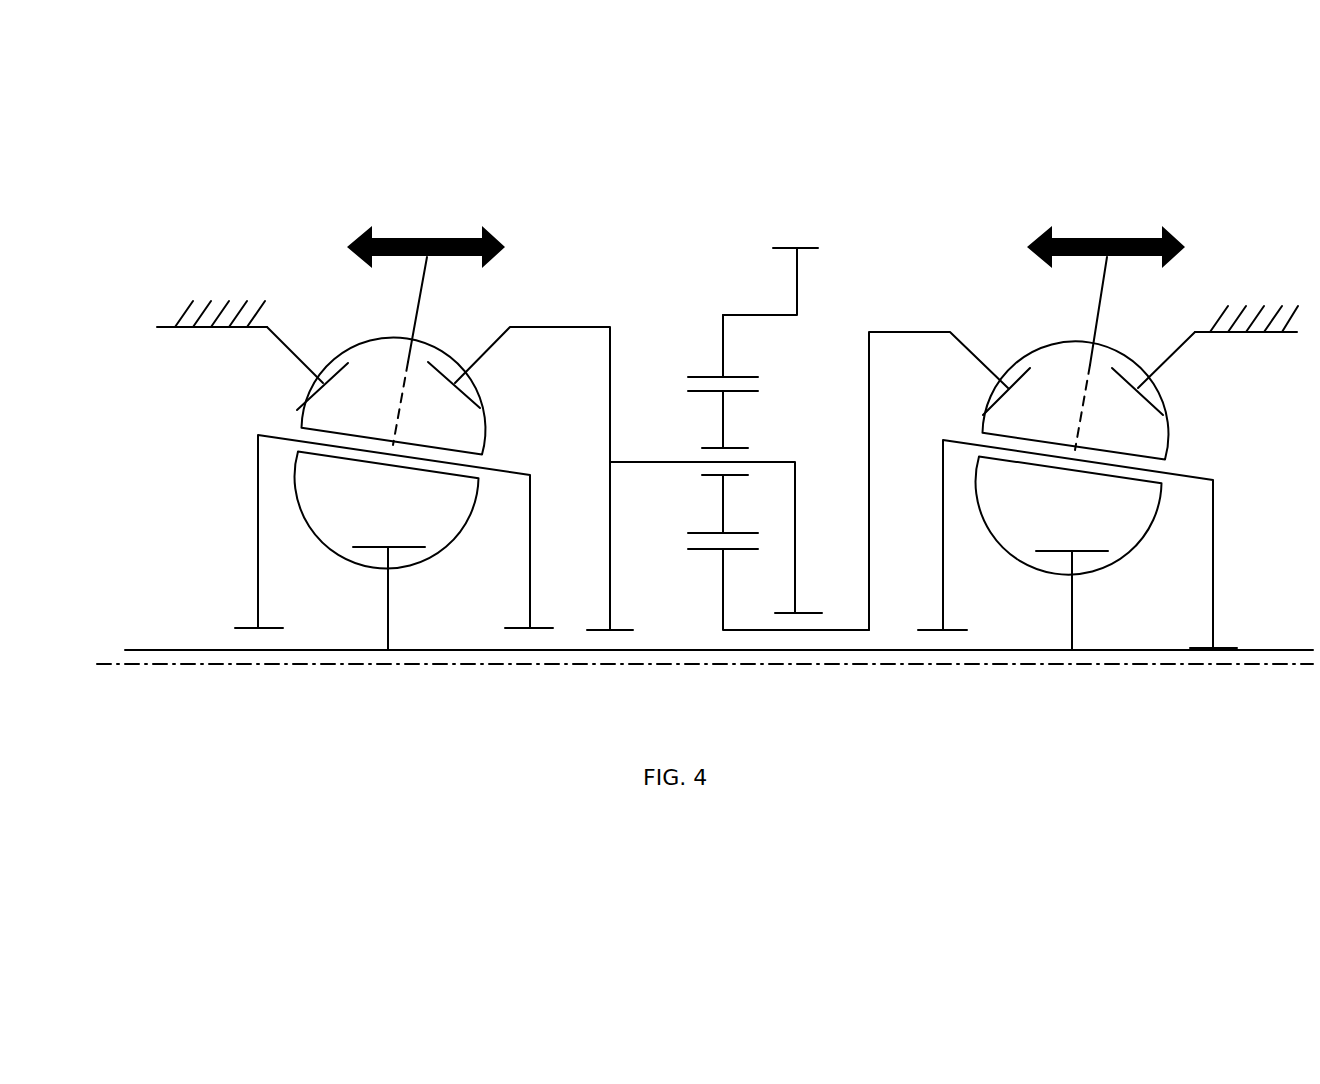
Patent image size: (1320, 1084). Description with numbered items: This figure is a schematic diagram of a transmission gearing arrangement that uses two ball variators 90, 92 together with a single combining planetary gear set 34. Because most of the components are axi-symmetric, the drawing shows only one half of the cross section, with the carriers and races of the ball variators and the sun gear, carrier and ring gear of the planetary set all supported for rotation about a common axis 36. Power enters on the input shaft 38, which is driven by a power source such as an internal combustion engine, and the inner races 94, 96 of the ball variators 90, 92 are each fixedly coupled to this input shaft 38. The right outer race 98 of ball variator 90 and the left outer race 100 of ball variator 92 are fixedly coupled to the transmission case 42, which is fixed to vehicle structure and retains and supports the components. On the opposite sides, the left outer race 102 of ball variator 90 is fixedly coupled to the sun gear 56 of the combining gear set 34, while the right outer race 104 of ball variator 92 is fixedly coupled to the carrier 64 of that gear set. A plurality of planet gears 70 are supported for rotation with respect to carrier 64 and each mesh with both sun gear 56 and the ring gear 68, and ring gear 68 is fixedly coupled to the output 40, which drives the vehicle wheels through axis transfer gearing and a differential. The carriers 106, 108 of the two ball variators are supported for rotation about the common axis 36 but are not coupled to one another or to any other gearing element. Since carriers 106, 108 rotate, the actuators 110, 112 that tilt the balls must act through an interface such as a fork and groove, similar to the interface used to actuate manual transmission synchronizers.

The combining gear set 34 is at (725, 260).
The common axis 36 is at (478, 664).
The input shaft 38 is at (187, 648).
The output 40 is at (797, 272).
The transmission case 42 is at (185, 318).
The sun gear 56 is at (723, 573).
The carrier 64 is at (768, 462).
The ring gear 68 is at (723, 355).
The planet gears 70 is at (723, 405).
The ball variator 90 is at (985, 258).
The ball variator 92 is at (296, 258).
The inner race 94 is at (1073, 607).
The inner race 96 is at (388, 598).
The right outer race 98 is at (1160, 366).
The left outer race 100 is at (296, 350).
The left outer race 102 is at (982, 352).
The right outer race 104 is at (480, 362).
The carrier 106 is at (943, 550).
The carrier 108 is at (258, 545).
The actuator 110 is at (1120, 258).
The actuator 112 is at (445, 258).